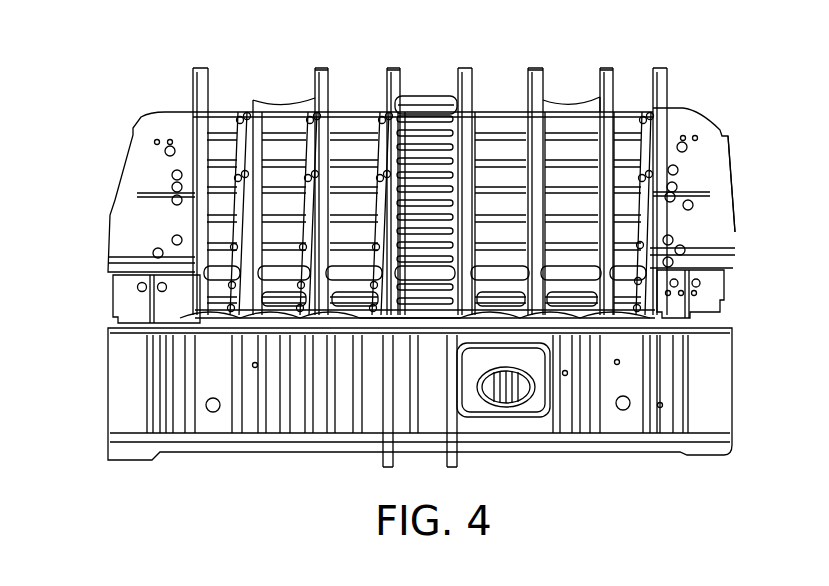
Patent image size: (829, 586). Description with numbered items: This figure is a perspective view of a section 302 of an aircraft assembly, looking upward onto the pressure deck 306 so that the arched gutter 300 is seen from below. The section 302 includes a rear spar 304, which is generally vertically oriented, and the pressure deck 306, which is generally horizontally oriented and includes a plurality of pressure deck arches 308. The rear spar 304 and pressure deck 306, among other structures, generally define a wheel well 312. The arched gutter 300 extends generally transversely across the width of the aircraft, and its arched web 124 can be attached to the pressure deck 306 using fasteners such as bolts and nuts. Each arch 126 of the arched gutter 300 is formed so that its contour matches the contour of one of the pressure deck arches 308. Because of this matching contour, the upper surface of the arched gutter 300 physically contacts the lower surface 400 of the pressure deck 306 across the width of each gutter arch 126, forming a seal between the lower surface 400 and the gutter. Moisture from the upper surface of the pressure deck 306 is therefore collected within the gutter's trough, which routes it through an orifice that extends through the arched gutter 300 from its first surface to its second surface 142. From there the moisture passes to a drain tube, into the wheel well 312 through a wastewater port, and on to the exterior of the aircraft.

The section 302 is at (97, 116).
The rear spar 304 is at (121, 395).
The pressure deck 306 is at (696, 122).
The pressure deck arches 308 is at (290, 96).
The arch 126 is at (350, 300).
The arched web 124 is at (667, 312).
The arched gutter 300 is at (200, 312).
The wheel well 312 is at (88, 333).
The lower surface 400 is at (694, 224).
The second surface 142 is at (606, 325).